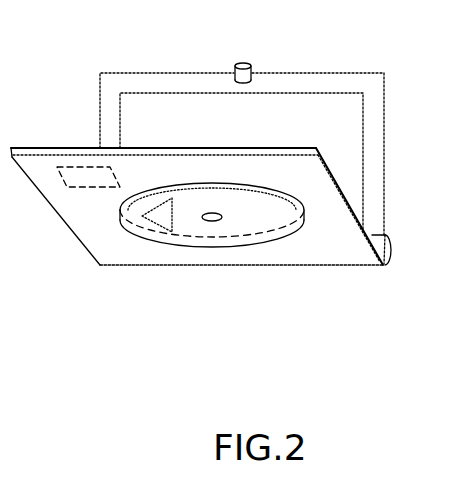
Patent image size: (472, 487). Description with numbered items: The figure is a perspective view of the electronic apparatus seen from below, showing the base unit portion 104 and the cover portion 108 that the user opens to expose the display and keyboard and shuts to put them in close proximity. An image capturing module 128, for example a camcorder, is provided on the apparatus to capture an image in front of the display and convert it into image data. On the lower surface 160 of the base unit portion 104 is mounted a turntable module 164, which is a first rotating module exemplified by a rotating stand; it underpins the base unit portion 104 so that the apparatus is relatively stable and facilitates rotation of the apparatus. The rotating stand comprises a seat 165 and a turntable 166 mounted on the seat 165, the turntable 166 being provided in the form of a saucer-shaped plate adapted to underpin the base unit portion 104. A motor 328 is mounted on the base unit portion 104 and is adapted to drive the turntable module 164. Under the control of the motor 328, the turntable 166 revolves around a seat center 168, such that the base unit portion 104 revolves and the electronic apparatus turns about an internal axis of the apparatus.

The base unit portion 104 is at (366, 232).
The cover portion 108 is at (386, 110).
The image capturing module 128 is at (244, 63).
The lower surface 160 is at (110, 265).
The turntable module 164 is at (204, 250).
The seat 165 is at (148, 242).
The turntable 166 is at (253, 190).
The seat center 168 is at (222, 220).
The motor 328 is at (75, 167).